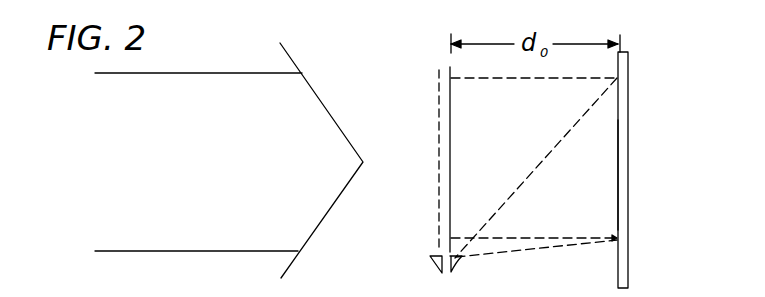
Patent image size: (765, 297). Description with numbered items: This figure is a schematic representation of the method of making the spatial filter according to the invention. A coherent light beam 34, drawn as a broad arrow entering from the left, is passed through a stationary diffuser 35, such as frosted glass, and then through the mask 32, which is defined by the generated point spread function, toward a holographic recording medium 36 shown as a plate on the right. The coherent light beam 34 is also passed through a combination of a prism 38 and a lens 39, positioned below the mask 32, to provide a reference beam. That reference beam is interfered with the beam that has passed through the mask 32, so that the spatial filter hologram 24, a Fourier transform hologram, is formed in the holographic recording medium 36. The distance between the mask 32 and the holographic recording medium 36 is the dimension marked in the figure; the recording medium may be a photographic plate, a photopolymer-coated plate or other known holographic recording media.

The coherent light beam 34 is at (163, 73).
The stationary diffuser 35 is at (437, 87).
The mask 32 is at (451, 125).
The holographic recording medium 36 is at (629, 62).
The spatial filter hologram 24 is at (617, 175).
The prism 38 is at (441, 273).
The lens 39 is at (452, 273).